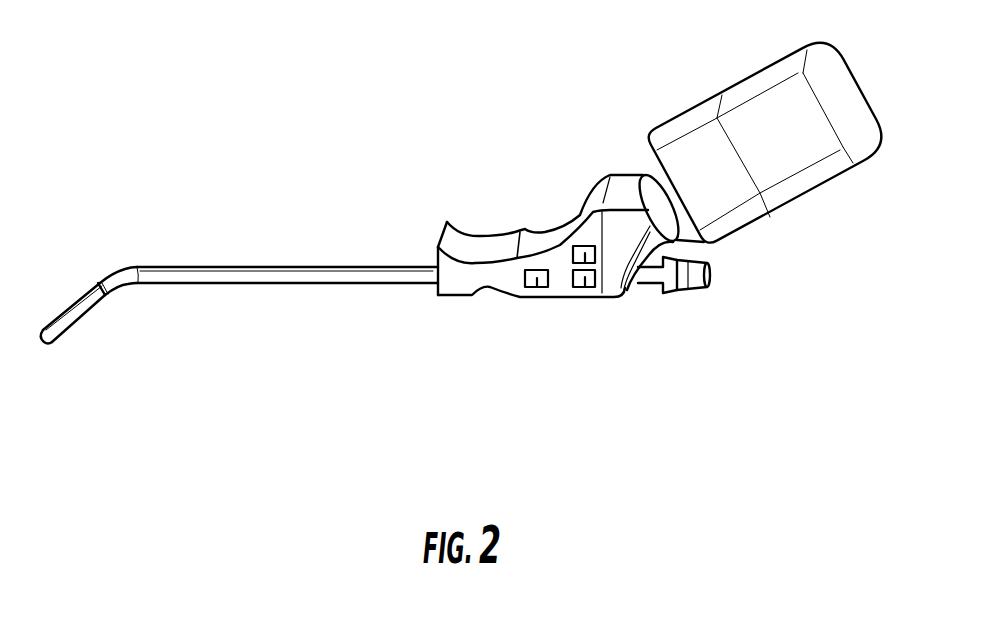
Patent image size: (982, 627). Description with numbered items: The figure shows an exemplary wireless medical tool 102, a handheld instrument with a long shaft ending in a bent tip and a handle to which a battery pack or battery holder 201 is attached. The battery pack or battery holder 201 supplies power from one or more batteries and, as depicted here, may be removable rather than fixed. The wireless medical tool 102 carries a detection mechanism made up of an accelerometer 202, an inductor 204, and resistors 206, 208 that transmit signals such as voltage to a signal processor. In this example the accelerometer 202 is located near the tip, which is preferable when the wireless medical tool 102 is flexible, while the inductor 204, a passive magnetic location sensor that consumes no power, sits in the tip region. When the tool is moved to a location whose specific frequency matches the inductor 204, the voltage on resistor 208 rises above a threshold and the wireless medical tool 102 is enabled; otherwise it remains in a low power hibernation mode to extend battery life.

The wireless medical tool 102 is at (328, 120).
The battery pack or battery holder 201 is at (815, 198).
The accelerometer 202 is at (114, 270).
The inductor 204 is at (537, 287).
The resistor 206 is at (582, 286).
The resistor 208 is at (585, 255).